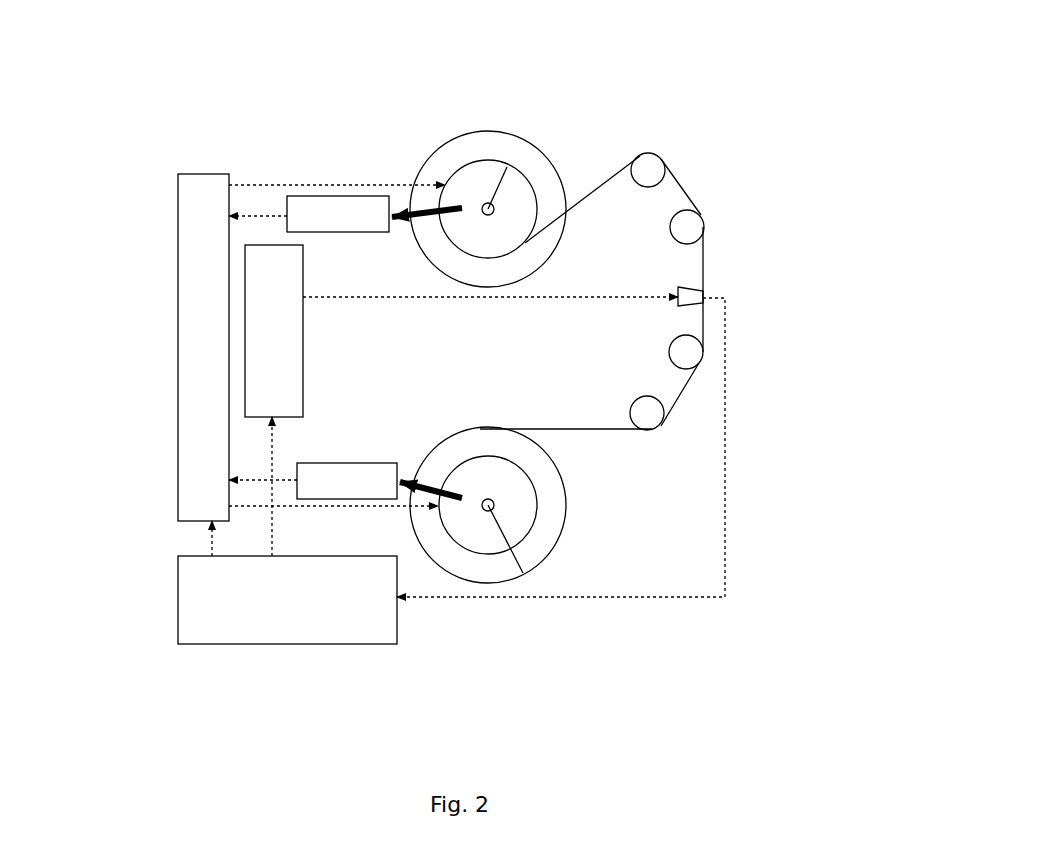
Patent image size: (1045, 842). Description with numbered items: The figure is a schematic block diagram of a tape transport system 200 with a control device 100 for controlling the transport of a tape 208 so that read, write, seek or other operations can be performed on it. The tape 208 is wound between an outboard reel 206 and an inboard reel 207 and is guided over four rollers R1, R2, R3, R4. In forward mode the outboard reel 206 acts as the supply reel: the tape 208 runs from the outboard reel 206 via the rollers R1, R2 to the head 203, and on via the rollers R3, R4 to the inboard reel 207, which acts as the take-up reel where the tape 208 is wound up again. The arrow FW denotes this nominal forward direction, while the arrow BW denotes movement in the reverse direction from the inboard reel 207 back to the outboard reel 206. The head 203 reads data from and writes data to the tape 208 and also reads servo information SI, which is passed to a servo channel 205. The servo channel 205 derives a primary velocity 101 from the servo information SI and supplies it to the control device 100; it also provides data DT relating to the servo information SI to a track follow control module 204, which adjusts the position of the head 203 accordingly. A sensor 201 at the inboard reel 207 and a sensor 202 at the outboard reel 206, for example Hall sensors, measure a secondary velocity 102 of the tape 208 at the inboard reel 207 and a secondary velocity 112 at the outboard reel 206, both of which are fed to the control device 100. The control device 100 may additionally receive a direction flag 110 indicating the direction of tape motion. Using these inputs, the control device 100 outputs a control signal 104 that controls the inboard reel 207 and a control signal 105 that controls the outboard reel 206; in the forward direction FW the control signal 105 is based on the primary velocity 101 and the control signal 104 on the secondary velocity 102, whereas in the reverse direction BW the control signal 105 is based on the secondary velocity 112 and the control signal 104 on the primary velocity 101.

The tape transport system 200 is at (800, 75).
The control device 100 is at (203, 347).
The primary velocity 101 is at (207, 545).
The secondary velocity 102 is at (255, 210).
The control signal 104 is at (327, 185).
The control signal 105 is at (358, 507).
The direction flag 110 is at (178, 348).
The secondary velocity 112 is at (275, 479).
The sensor 201 is at (345, 214).
The sensor 202 is at (345, 481).
The head 203 is at (703, 292).
The track follow control module 204 is at (461, 400).
The servo channel 205 is at (287, 600).
The outboard reel 206 is at (570, 510).
The inboard reel 207 is at (537, 147).
The tape 208 is at (573, 428).
The roller R1 is at (647, 435).
The roller R2 is at (665, 376).
The roller R3 is at (701, 255).
The roller R4 is at (595, 178).
The reverse direction BW is at (705, 193).
The forward direction FW is at (709, 381).
The servo information SI is at (725, 490).
The data DT is at (273, 537).